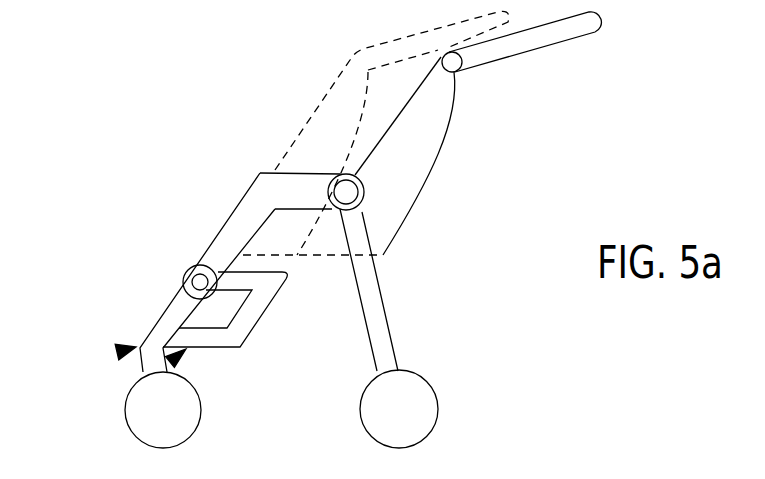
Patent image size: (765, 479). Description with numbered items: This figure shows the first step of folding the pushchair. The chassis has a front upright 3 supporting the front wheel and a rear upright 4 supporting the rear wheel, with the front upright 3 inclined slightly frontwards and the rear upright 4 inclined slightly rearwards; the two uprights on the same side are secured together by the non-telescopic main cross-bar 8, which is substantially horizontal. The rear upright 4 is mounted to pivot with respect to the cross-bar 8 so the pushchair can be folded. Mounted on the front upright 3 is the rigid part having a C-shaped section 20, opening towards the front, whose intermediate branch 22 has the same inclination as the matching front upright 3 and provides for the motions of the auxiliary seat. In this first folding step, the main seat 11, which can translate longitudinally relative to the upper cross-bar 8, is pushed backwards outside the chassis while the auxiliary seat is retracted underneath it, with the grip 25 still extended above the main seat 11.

The front upright 3 is at (180, 310).
The rear upright 4 is at (379, 308).
The main cross-bar 8 is at (285, 188).
The main seat 11 is at (427, 132).
The C-shaped section part 20 is at (167, 365).
The intermediate branch 22 is at (248, 315).
The grip 25 is at (583, 22).